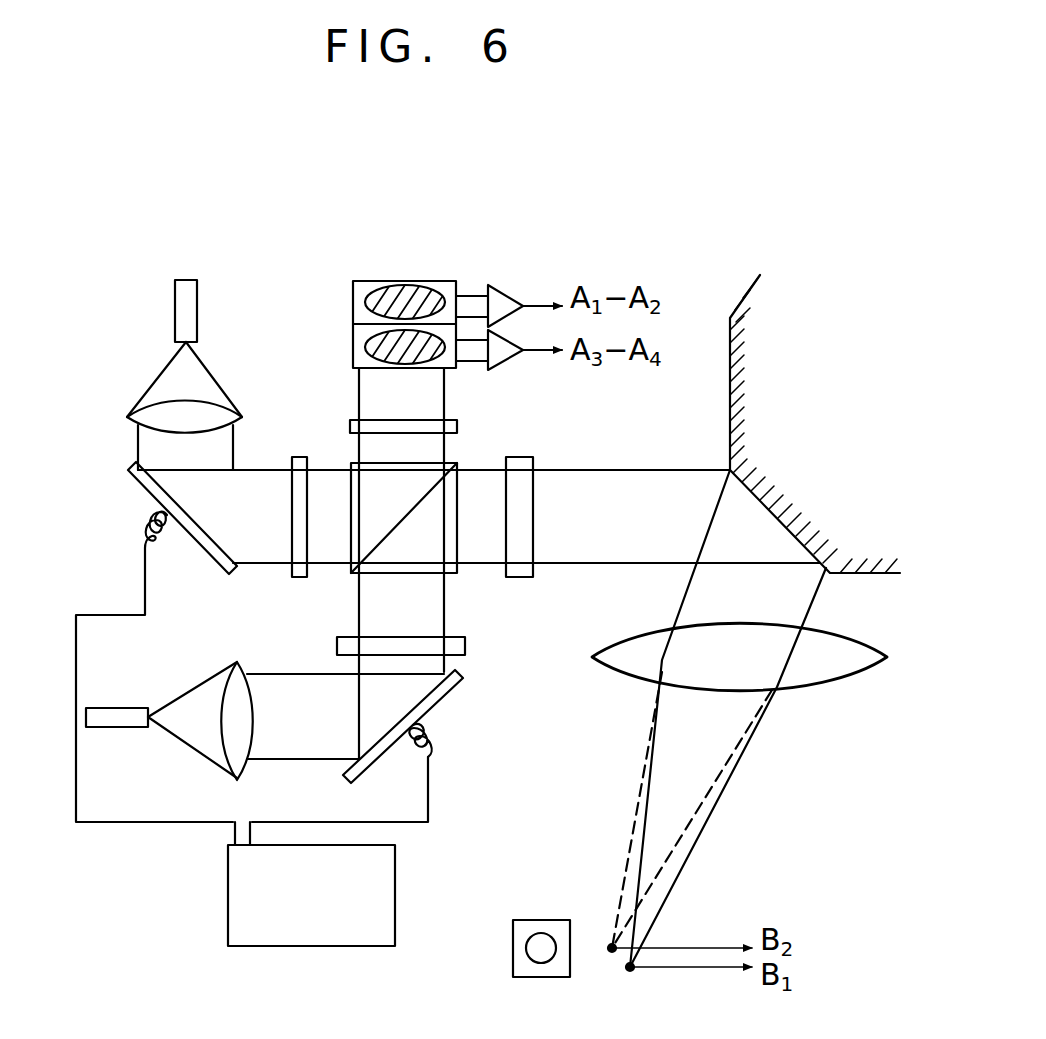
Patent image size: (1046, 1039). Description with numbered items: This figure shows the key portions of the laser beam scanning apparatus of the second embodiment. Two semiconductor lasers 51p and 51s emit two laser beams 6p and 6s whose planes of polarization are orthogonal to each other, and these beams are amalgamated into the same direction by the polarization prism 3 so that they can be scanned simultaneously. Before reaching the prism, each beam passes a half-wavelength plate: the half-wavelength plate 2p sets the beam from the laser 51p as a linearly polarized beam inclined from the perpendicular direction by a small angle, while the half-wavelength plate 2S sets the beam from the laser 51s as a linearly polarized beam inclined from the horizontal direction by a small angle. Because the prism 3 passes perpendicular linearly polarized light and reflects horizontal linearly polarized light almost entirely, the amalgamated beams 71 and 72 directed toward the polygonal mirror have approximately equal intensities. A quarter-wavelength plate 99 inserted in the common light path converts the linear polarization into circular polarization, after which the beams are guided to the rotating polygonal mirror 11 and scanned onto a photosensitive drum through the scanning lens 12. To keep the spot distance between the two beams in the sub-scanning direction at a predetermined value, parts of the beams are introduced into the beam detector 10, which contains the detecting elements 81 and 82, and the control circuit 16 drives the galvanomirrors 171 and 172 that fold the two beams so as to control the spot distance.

The semiconductor laser 51p is at (175, 302).
The laser beam 71 is at (138, 415).
The galvanomirror 171 is at (134, 483).
The laser beam 6p is at (270, 478).
The half wavelength plate 2p is at (306, 549).
The polarization prism 3 is at (348, 558).
The beam detector 10 is at (353, 296).
The detecting element 81 is at (415, 293).
The detecting element 82 is at (437, 353).
The quarter wavelength plate 99 is at (534, 513).
The half wavelength plate 2S is at (465, 647).
The laser beam 6s is at (277, 683).
The galvanomirror 172 is at (442, 695).
The semiconductor laser 51s is at (108, 729).
The laser beam 72 is at (236, 775).
The control circuit 16 is at (356, 946).
The rotating polygonal mirror 11 is at (742, 470).
The scanning lens 12 is at (842, 675).